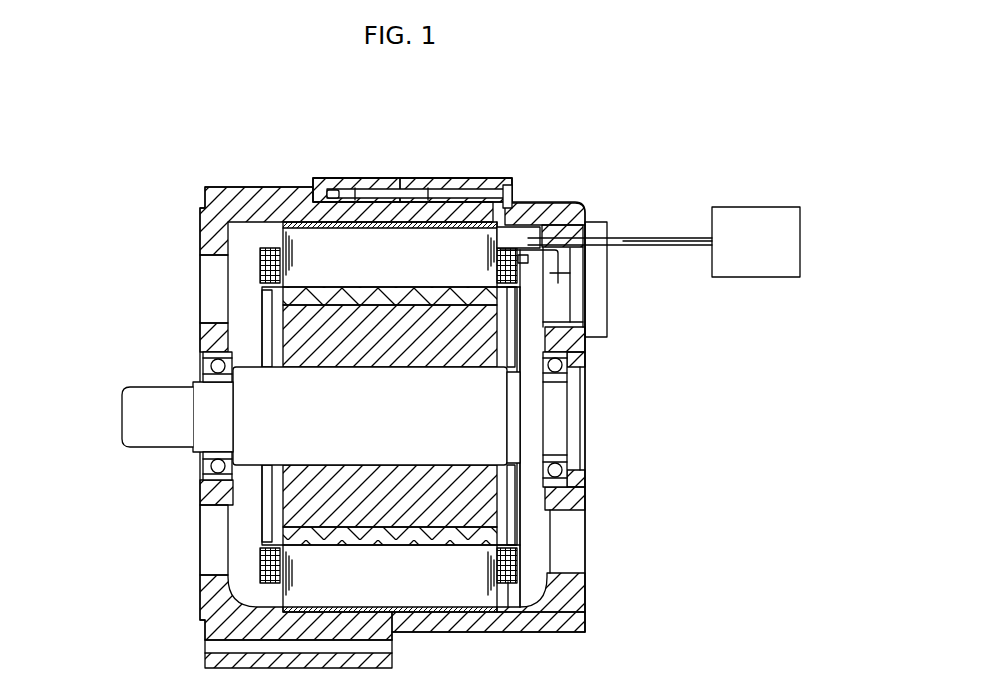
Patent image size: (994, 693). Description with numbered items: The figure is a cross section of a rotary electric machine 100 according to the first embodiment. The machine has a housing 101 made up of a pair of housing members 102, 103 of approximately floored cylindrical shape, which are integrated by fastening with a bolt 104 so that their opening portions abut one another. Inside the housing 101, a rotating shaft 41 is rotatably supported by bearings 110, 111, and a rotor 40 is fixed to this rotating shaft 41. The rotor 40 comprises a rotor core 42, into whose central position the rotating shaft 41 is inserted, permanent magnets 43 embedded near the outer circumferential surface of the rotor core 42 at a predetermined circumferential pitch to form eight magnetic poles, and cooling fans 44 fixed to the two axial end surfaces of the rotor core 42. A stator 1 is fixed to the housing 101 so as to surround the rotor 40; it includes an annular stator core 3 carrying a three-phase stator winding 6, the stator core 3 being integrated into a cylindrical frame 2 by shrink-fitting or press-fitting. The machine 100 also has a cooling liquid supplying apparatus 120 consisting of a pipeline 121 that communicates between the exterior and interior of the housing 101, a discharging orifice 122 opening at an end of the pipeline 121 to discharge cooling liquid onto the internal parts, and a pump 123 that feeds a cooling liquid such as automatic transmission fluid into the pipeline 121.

The rotary electric machine 100 is at (145, 113).
The stator 1 is at (273, 240).
The cylindrical frame 2 is at (423, 612).
The stator core 3 is at (460, 588).
The stator winding 6 is at (508, 585).
The rotor 40 is at (277, 300).
The rotating shaft 41 is at (130, 390).
The rotor core 42 is at (490, 503).
The permanent magnets 43 is at (490, 532).
The cooling fans 44 is at (277, 517).
The housing 101 is at (460, 126).
The housing member 102 is at (438, 182).
The housing member 103 is at (343, 184).
The bolt 104 is at (520, 188).
The bearing 110 is at (572, 478).
The bearing 111 is at (205, 480).
The cooling liquid supplying apparatus 120 is at (683, 232).
The pipeline 121 is at (632, 238).
The discharging orifice 122 is at (525, 235).
The pump 123 is at (738, 210).